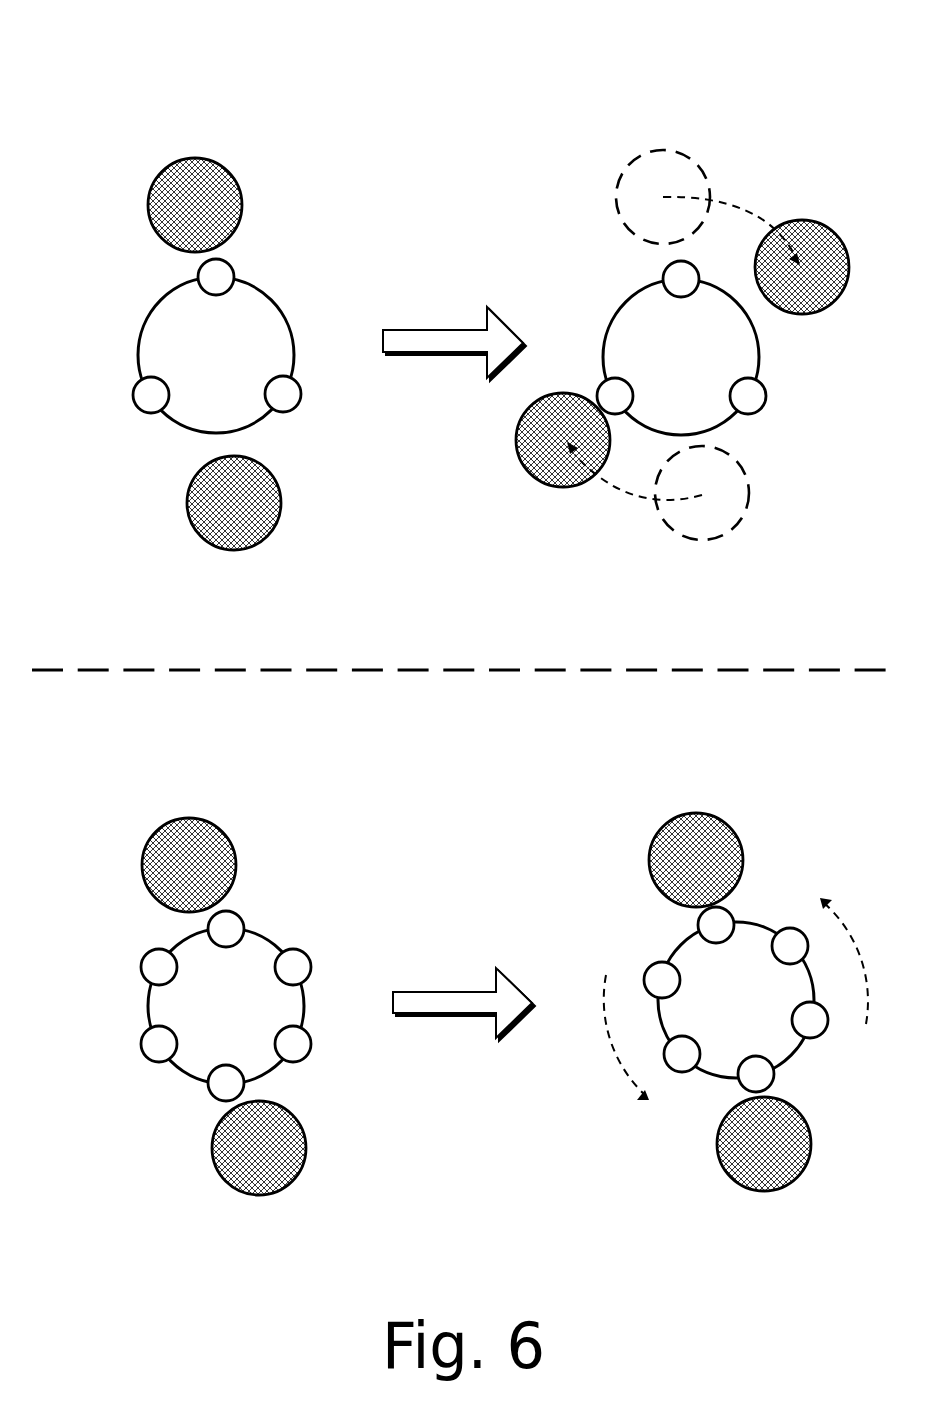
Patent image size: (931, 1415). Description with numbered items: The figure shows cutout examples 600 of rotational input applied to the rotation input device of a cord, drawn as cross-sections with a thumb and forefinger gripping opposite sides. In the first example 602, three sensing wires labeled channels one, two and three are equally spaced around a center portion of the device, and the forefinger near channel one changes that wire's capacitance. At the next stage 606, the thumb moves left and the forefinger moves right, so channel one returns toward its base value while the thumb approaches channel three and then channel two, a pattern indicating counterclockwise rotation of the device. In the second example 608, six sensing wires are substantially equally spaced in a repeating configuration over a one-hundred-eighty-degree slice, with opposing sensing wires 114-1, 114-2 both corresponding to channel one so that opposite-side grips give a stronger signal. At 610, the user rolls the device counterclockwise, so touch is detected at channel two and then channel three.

The cutout examples 600 is at (780, 66).
The first example 602 is at (320, 172).
The movement stage of first example 606 is at (534, 206).
The second example 608 is at (352, 829).
The rolling stage of second example 610 is at (568, 830).
The sensing wire 114-1 is at (228, 914).
The sensing wire 114-2 is at (213, 1097).